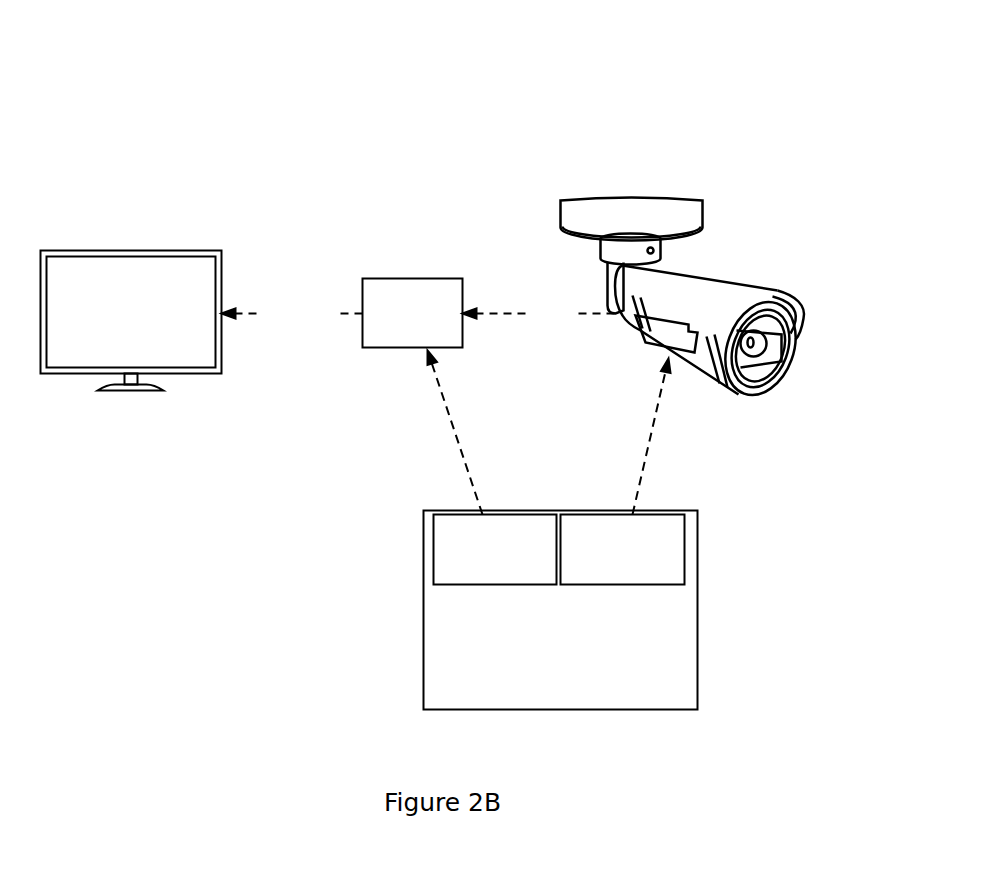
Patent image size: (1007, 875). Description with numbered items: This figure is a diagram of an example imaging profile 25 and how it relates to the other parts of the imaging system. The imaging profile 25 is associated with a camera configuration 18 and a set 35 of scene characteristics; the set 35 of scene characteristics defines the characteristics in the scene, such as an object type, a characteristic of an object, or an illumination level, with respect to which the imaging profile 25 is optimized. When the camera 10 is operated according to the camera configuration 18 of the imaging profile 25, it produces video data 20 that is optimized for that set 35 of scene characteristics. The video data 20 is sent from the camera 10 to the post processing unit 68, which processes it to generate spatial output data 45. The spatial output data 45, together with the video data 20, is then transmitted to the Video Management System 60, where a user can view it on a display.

The camera 10 is at (710, 303).
The camera configuration 18 is at (623, 550).
The video data 20 is at (540, 314).
The imaging profile 25 is at (561, 610).
The set of scene characteristics 35 is at (495, 550).
The spatial output data 45 is at (292, 314).
The Video Management System 60 is at (151, 255).
The post processing unit 68 is at (398, 278).